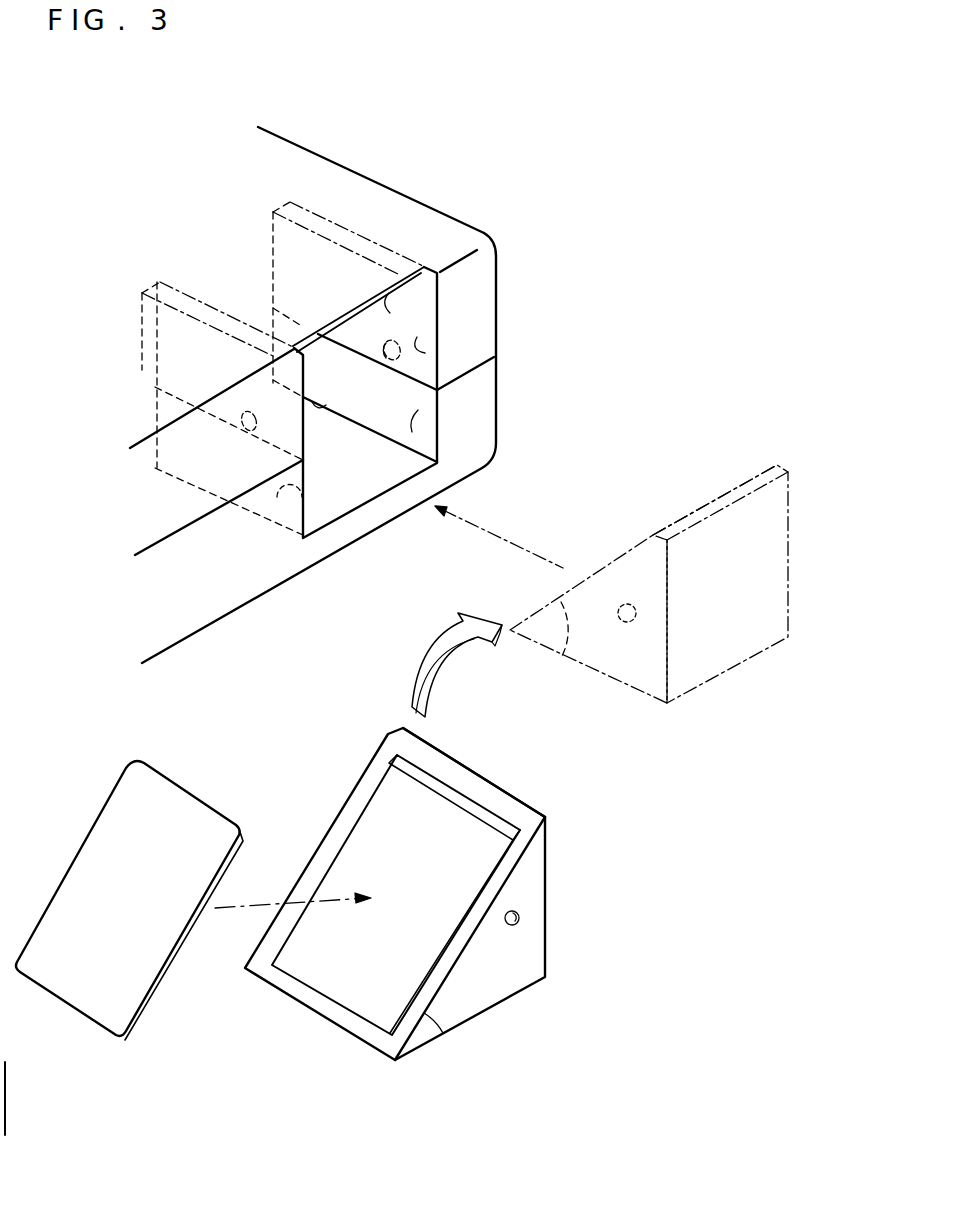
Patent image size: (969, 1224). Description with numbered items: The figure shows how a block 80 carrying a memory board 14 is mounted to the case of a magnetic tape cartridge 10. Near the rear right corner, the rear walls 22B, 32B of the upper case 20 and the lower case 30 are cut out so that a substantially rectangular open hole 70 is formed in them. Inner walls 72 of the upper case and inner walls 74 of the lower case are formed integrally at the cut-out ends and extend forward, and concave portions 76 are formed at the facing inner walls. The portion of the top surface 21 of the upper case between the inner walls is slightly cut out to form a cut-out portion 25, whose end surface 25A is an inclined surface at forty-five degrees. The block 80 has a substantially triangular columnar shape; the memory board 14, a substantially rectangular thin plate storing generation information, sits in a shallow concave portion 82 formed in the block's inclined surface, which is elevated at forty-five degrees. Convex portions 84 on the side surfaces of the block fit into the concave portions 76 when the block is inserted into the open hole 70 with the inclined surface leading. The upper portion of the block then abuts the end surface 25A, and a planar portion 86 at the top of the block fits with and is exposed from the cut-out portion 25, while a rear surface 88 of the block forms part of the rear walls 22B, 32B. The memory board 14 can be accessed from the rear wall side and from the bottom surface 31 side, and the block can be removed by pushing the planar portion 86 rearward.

The magnetic tape cartridge 10 is at (296, 132).
The memory board 14 is at (107, 860).
The upper case 20 is at (387, 187).
The top surface 21 is at (238, 230).
The rear wall 22B is at (172, 456).
The cut-out portion 25 is at (327, 320).
The end surface 25A is at (392, 303).
The lower case 30 is at (498, 415).
The bottom surface 31 is at (261, 553).
The rear wall 32B is at (175, 610).
The open hole 70 is at (358, 468).
The inner wall 72 is at (420, 350).
The inner wall 74 is at (420, 432).
The concave portion 76 is at (438, 390).
The block 80 is at (775, 525).
The concave portion 82 is at (367, 977).
The convex portion 84 is at (630, 633).
The planar portion 86 is at (760, 482).
The rear surface 88 is at (717, 607).